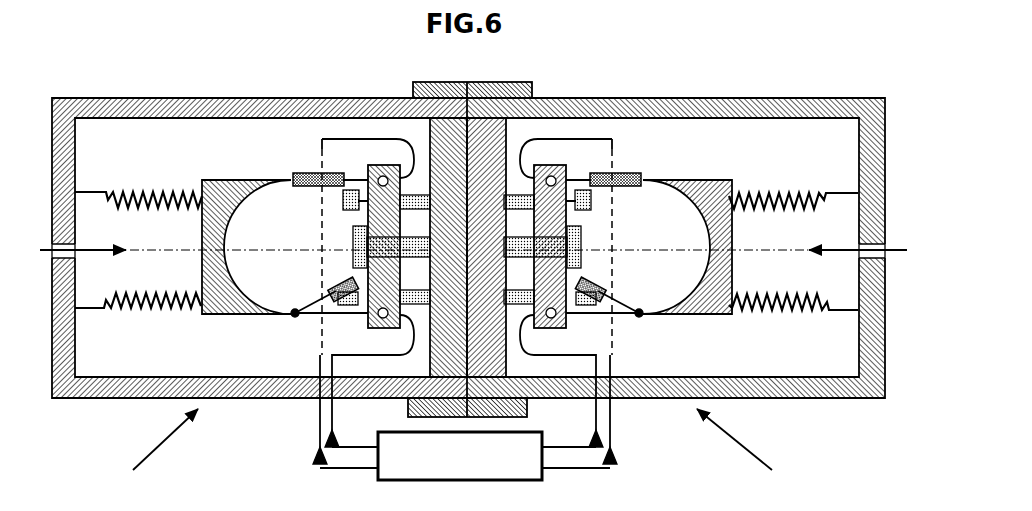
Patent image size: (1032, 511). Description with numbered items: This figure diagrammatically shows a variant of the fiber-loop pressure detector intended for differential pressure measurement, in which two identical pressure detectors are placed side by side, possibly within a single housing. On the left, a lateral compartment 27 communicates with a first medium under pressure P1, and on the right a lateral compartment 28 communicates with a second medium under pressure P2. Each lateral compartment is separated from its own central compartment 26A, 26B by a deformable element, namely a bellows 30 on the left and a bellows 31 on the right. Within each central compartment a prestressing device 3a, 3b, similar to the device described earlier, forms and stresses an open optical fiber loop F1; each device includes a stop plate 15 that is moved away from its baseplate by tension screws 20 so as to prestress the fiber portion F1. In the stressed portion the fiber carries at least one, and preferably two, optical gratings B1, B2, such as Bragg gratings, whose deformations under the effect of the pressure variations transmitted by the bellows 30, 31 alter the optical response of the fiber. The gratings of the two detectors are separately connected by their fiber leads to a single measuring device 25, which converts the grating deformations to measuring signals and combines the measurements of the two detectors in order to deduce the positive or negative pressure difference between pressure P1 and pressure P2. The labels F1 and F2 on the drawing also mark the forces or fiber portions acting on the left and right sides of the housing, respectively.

The device for prestressing an optical fiber portion 3a is at (273, 162).
The device for prestressing an optical fiber portion 3b is at (673, 164).
The stop plate 15 is at (384, 176).
The tension screws 20 is at (351, 190).
The optical measuring system 25 is at (447, 473).
The central compartment 26A is at (253, 244).
The central compartment 26B is at (628, 246).
The lateral compartment 27 is at (143, 244).
The lateral compartment 28 is at (754, 246).
The bellows 30 is at (152, 188).
The bellows 31 is at (787, 190).
The optical grating B1 is at (466, 167).
The optical grating B2 is at (464, 289).
The pressure P1 is at (83, 236).
The pressure P2 is at (861, 237).
The optical fiber portion F1 is at (154, 444).
The second force F2 is at (749, 444).